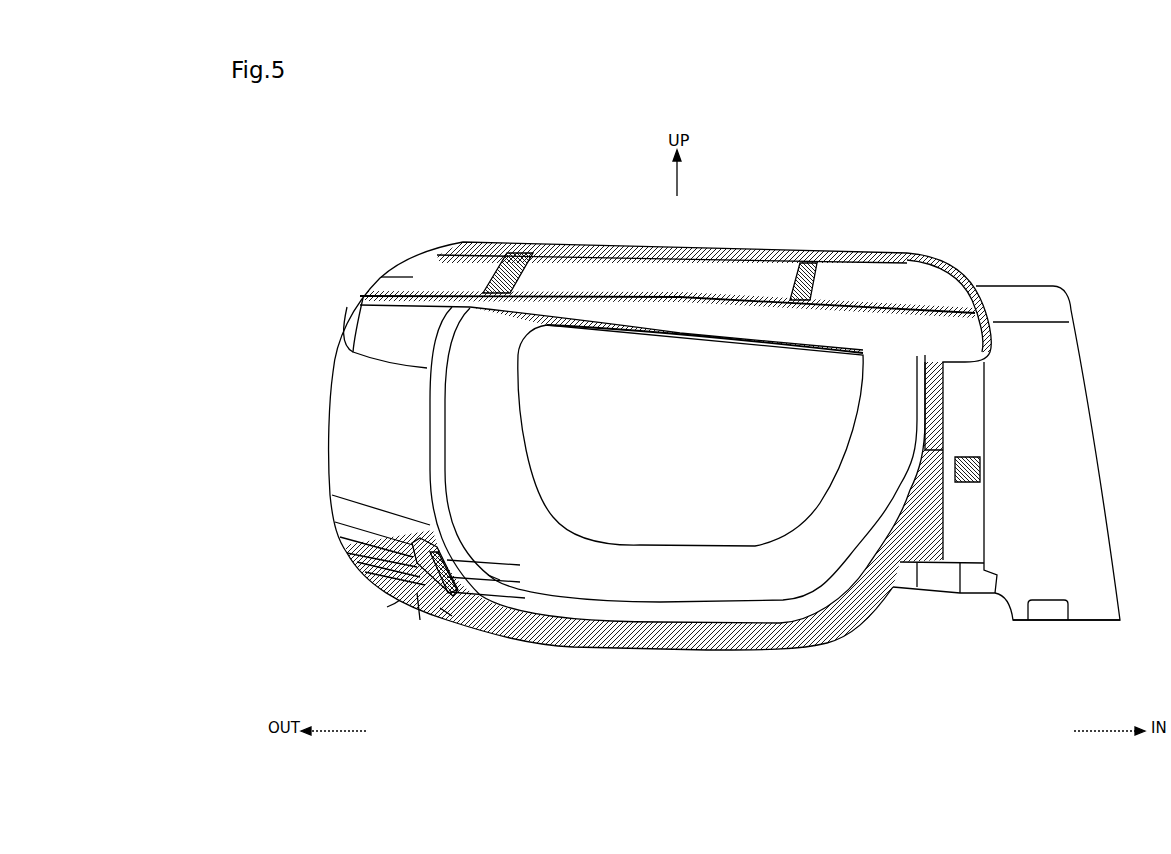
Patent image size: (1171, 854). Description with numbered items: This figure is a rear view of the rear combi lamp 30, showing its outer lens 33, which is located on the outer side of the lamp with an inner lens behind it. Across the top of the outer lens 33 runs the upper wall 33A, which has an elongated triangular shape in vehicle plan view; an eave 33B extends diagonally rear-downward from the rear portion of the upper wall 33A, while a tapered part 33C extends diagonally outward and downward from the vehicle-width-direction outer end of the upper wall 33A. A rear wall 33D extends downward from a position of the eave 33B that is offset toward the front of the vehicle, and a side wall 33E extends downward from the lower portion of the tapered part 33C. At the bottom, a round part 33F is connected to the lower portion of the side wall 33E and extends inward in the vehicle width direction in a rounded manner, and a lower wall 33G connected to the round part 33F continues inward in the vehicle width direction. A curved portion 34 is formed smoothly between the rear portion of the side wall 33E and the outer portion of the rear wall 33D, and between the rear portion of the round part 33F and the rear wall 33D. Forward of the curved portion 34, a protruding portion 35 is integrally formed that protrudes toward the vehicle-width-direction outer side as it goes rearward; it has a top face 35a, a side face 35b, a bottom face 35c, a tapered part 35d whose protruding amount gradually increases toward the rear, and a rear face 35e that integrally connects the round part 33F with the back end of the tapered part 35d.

The rear combi lamp 30 is at (828, 221).
The outer lens 33 is at (555, 241).
The upper wall 33A is at (738, 245).
The eave 33B is at (890, 280).
The tapered part 33C is at (379, 279).
The rear wall 33D is at (710, 424).
The side wall 33E is at (352, 406).
The round part 33F is at (420, 617).
The lower wall 33G is at (705, 648).
The curved portion 34 is at (508, 540).
The protruding portion 35 is at (413, 542).
The top face 35a is at (415, 542).
The side face 35b is at (400, 600).
The bottom face 35c is at (447, 613).
The tapered part 35d is at (413, 555).
The rear face 35e is at (493, 577).